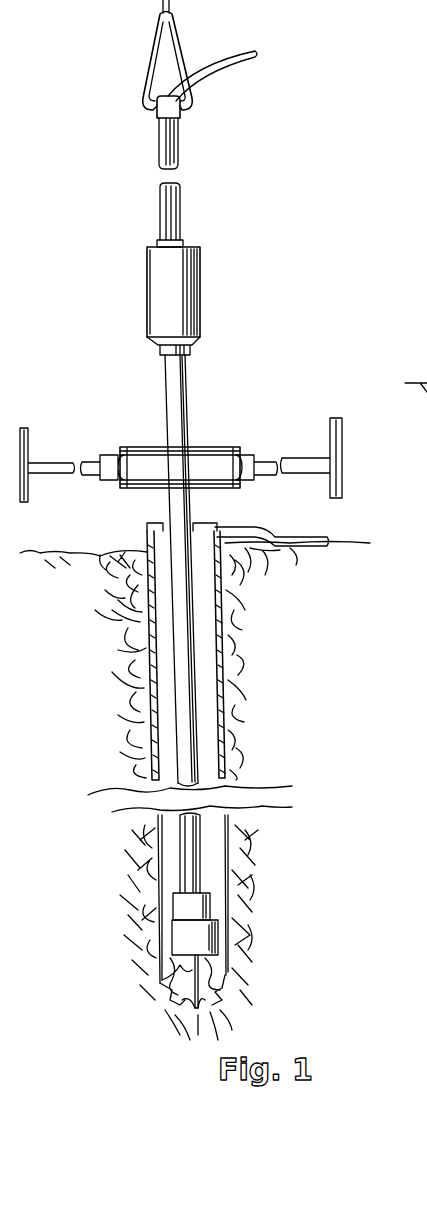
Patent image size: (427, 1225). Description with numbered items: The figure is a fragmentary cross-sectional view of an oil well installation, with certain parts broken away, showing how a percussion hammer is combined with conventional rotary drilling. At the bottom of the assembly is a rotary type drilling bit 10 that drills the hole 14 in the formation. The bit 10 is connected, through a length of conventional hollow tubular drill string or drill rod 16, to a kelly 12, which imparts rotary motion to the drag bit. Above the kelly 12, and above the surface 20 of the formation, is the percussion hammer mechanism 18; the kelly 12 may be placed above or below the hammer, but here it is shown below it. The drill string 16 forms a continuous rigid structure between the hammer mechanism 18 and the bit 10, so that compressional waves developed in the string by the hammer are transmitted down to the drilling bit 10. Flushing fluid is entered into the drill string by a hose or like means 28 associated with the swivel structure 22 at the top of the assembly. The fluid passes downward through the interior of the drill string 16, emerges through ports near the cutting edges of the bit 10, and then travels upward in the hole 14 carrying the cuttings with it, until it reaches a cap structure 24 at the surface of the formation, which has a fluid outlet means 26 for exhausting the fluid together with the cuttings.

The rotary type drilling bit 10 is at (232, 962).
The kelly 12 is at (209, 438).
The hole 14 is at (148, 646).
The drill string 16 is at (193, 667).
The percussion hammer mechanism 18 is at (203, 286).
The surface of the formation 20 is at (92, 550).
The swivel structure 22 is at (190, 33).
The cap structure 24 is at (199, 519).
The fluid outlet means 26 is at (256, 531).
The hose 28 is at (229, 62).